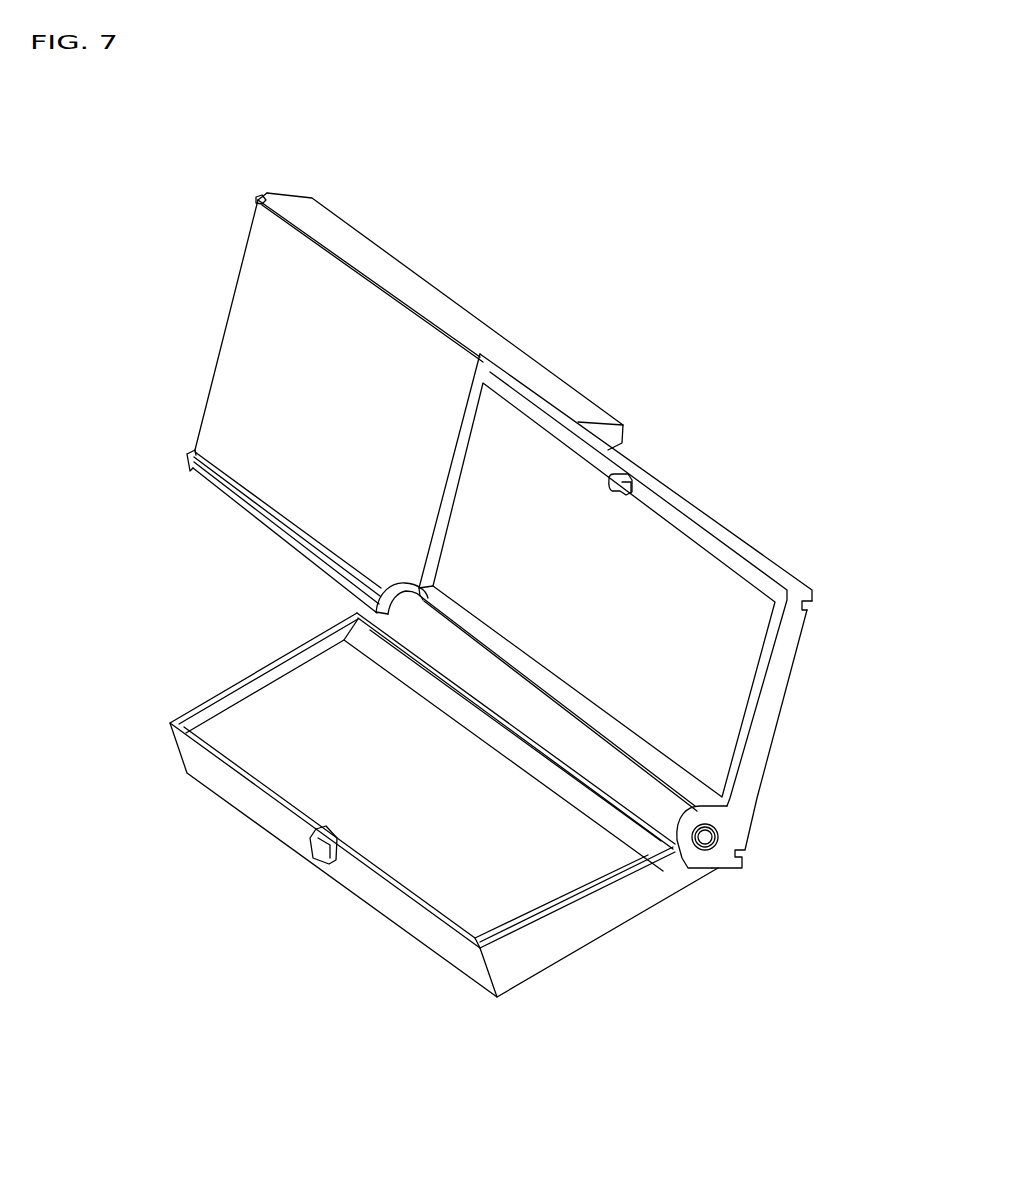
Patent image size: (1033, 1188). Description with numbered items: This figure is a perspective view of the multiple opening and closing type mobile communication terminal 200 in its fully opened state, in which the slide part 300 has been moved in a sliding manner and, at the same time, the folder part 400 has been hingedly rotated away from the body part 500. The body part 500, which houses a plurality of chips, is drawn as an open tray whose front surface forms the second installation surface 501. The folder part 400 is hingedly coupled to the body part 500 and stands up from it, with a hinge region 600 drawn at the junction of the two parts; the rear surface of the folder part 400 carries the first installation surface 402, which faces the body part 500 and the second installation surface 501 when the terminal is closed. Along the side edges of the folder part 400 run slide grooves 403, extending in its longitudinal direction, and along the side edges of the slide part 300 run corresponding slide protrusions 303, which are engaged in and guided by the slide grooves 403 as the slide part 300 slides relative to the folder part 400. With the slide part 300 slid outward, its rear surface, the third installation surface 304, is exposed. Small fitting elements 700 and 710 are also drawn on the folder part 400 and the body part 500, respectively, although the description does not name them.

The multiple opening and closing type mobile communication terminal 200 is at (146, 251).
The slide part 300 is at (357, 247).
The slide protrusion 303 is at (258, 196).
The third installation surface 304 is at (245, 345).
The folder part 400 is at (725, 537).
The first installation surface 402 is at (737, 652).
The slide groove 403 is at (814, 605).
The body part 500 is at (552, 942).
The second installation surface 501 is at (430, 873).
The hinge 600 is at (722, 874).
The locking member 700 is at (631, 478).
The locking groove 710 is at (313, 853).